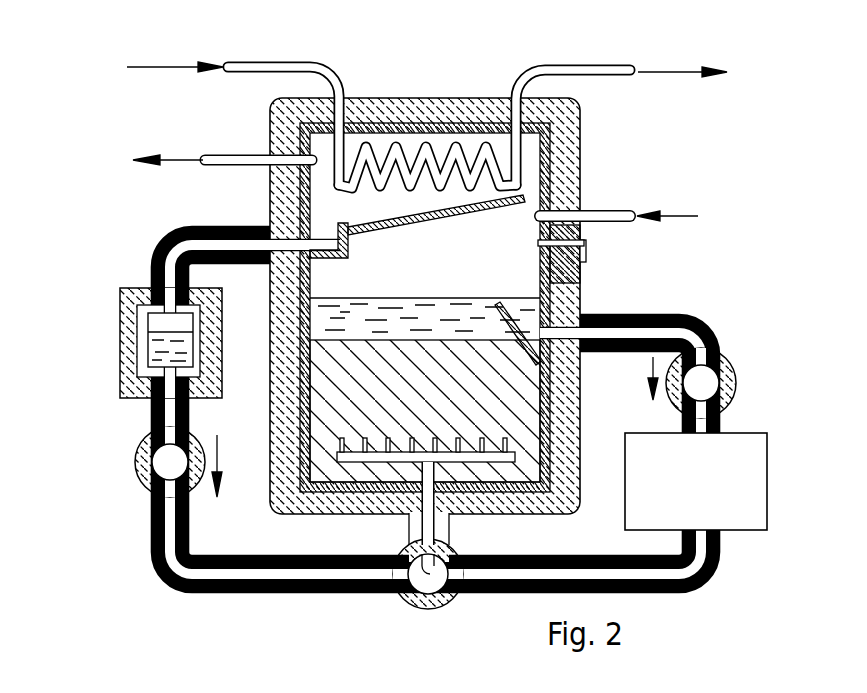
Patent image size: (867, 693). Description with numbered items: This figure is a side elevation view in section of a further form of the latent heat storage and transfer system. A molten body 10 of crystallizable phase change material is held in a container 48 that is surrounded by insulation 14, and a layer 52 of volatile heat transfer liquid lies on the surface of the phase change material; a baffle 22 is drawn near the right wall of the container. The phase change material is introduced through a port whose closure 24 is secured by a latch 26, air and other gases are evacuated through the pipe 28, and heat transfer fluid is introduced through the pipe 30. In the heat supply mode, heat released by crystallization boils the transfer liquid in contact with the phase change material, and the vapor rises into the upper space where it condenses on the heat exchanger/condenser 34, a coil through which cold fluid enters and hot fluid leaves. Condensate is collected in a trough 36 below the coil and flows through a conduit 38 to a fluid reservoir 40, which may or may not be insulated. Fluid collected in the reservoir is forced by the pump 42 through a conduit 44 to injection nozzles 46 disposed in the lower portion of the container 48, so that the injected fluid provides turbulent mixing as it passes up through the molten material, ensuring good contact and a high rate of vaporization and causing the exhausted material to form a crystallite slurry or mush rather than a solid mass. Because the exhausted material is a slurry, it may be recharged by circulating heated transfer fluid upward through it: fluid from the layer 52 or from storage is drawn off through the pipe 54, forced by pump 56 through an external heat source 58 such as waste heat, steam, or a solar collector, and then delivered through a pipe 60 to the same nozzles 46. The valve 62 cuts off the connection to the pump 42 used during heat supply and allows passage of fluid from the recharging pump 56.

The molten body of PCM 10 is at (522, 398).
The insulation 14 is at (385, 102).
The baffle 22 is at (540, 277).
The closure 24 is at (581, 268).
The latch 26 is at (538, 231).
The pipe 28 is at (228, 157).
The pipe 30 is at (594, 212).
The heat exchanger/condenser 34 is at (434, 145).
The trough 36 is at (338, 227).
The conduit 38 is at (215, 227).
The fluid reservoir 40 is at (160, 318).
The pump 42 is at (153, 472).
The conduit 44 is at (172, 540).
The injection nozzles 46 is at (440, 447).
The container 48 is at (552, 143).
The layer 52 is at (396, 310).
The pipe 54 is at (648, 332).
The pump 56 is at (713, 372).
The external heat source 58 is at (733, 530).
The pipe 60 is at (545, 573).
The valve 62 is at (422, 590).